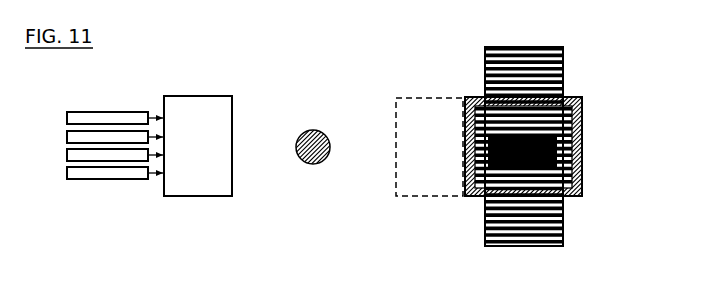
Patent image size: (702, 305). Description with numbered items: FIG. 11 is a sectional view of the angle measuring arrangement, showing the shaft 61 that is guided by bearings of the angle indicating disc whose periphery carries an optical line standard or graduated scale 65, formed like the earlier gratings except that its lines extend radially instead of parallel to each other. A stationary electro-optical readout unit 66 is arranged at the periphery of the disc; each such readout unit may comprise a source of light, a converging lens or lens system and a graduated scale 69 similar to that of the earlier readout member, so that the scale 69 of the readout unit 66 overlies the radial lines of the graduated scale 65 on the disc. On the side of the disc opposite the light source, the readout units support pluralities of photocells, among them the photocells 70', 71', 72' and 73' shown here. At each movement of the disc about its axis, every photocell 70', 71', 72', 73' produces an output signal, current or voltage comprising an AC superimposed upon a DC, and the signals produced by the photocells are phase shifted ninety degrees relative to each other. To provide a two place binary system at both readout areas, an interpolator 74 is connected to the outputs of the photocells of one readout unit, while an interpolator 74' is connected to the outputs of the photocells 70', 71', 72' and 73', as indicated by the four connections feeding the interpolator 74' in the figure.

The photocell 70' is at (95, 114).
The photocell 71' is at (95, 133).
The photocell 72' is at (95, 153).
The photocell 73' is at (95, 175).
The interpolator 74' is at (198, 164).
The shaft 61 is at (327, 140).
The interpolator 74 is at (429, 166).
The graduated scale 65 is at (545, 80).
The graduated scale 69 is at (562, 130).
The electro-optical readout unit 66 is at (583, 164).